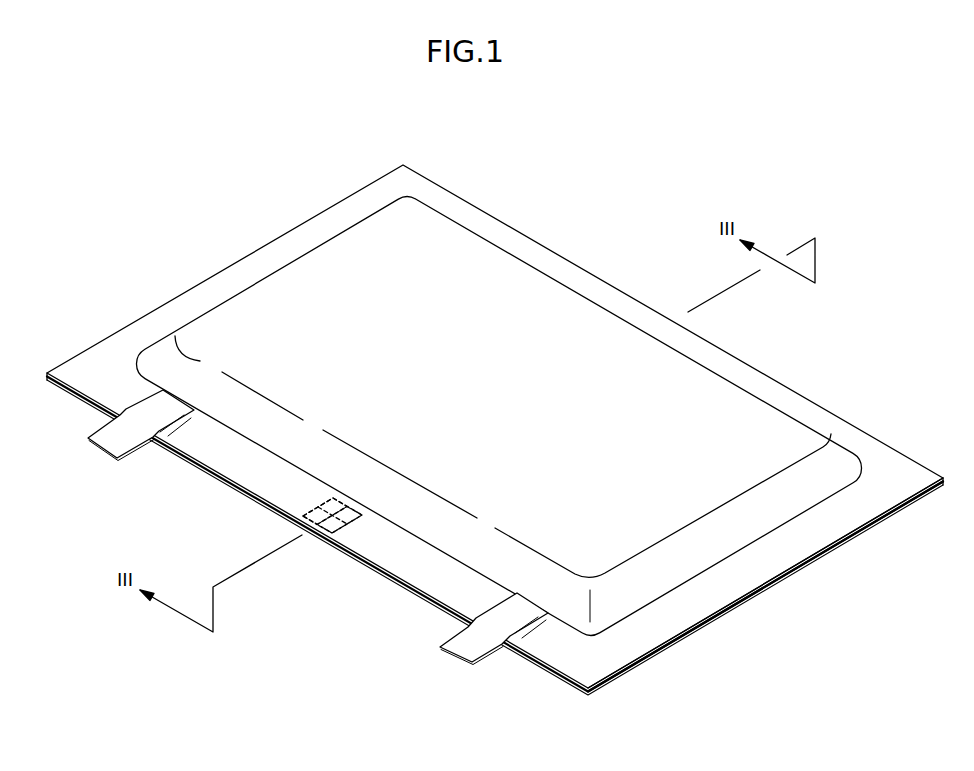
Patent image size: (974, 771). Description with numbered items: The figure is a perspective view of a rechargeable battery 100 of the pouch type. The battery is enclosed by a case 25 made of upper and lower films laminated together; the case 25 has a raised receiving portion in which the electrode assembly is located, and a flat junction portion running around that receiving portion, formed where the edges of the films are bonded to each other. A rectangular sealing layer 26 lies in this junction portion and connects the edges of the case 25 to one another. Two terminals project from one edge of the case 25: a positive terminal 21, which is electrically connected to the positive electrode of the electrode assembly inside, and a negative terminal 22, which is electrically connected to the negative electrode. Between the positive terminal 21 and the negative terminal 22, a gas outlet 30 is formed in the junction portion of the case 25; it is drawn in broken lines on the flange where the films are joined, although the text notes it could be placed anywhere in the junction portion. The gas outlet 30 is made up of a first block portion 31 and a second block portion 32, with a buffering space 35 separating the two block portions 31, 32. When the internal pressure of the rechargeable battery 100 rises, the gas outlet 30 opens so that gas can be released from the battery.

The rechargeable battery 100 is at (462, 110).
The positive terminal 21 is at (100, 438).
The negative terminal 22 is at (475, 643).
The case 25 is at (837, 462).
The sealing layer 26 is at (630, 667).
The gas outlet 30 is at (365, 630).
The first block portion 31 is at (362, 515).
The second block portion 32 is at (318, 528).
The buffering space 35 is at (345, 522).